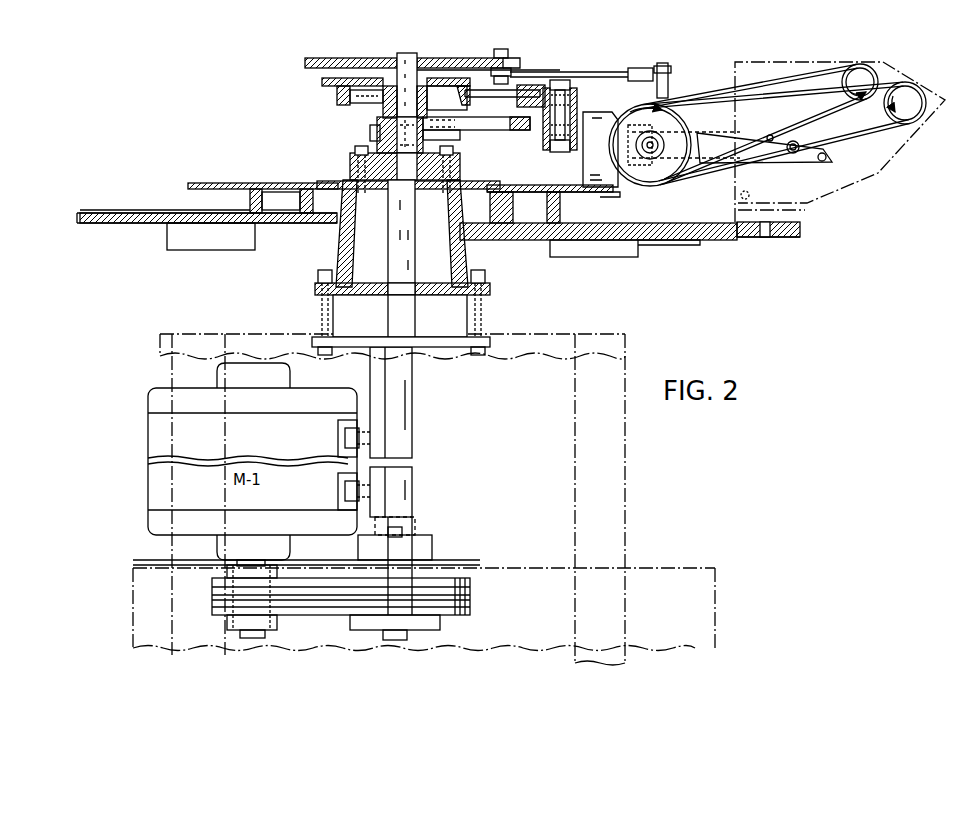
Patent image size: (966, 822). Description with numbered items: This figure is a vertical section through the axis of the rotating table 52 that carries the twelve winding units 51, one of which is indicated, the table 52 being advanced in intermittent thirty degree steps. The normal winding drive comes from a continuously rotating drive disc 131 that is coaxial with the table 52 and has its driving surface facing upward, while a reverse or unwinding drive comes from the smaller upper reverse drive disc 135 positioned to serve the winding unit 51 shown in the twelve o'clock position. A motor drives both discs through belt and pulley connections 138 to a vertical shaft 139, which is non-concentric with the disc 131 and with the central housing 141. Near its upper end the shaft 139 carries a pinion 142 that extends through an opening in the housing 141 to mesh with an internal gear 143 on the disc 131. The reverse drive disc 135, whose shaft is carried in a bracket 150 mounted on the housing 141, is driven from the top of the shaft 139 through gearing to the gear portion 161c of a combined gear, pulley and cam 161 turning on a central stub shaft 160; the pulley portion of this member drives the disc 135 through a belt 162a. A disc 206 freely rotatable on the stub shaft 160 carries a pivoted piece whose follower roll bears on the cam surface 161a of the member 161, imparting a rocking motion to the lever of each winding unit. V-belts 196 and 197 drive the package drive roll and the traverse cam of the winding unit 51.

The central stub shaft 160 is at (410, 58).
The disc 206 is at (470, 62).
The belt 162a is at (535, 72).
The cam surface 161a is at (322, 82).
The combined gear, pulley and cam 161 is at (318, 100).
The gear portion 161c is at (337, 103).
The bracket 150 is at (533, 130).
The reverse drive disc 135 is at (614, 103).
The drive disc 131 is at (563, 186).
The V-belt 196 is at (780, 80).
The V-belt 197 is at (762, 95).
The winding unit 51 is at (846, 186).
The table 52 is at (777, 238).
The internal gear 143 is at (330, 237).
The pinion 142 is at (343, 257).
The vertical shaft 139 is at (398, 262).
The central housing 141 is at (462, 265).
The belt and pulley connections 138 is at (318, 632).